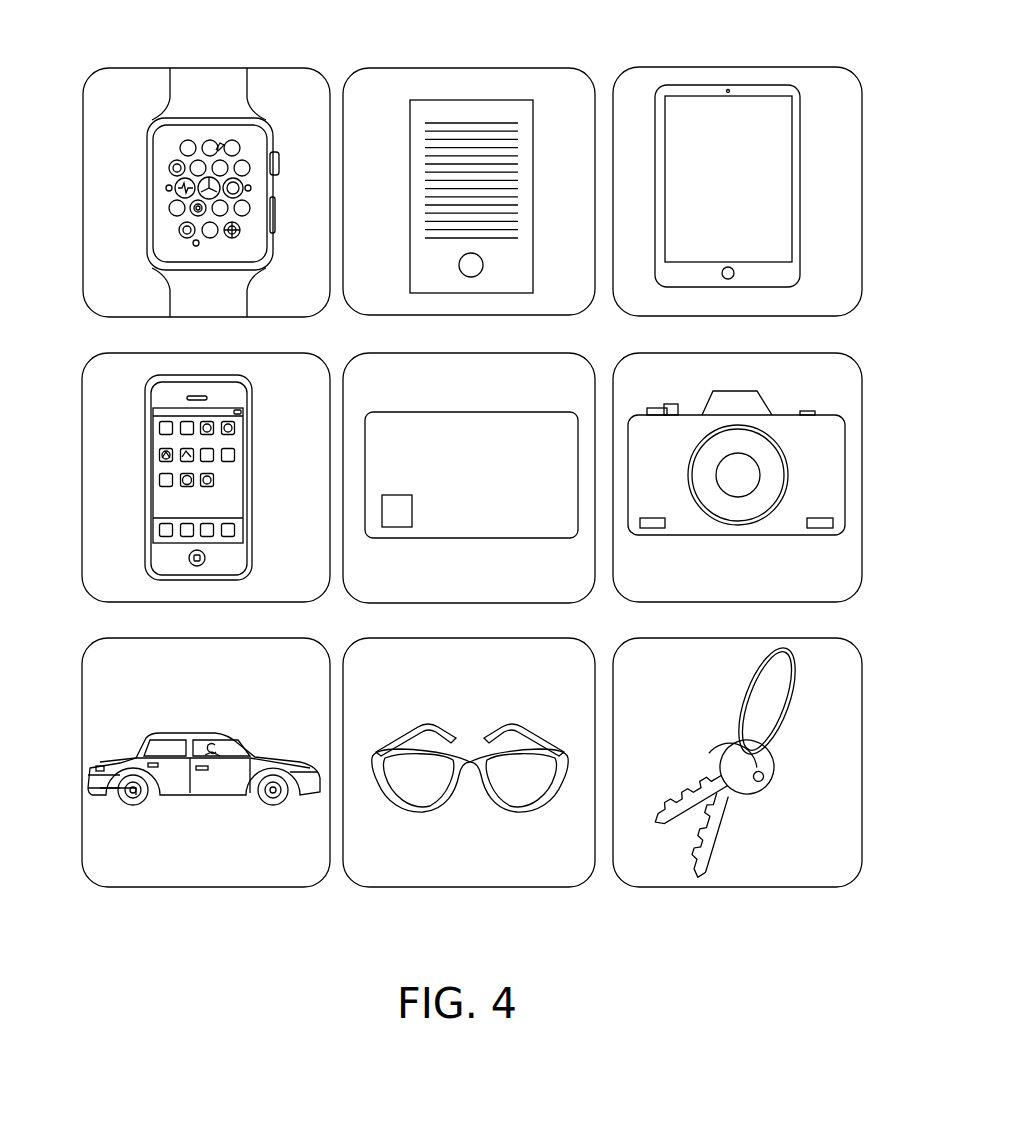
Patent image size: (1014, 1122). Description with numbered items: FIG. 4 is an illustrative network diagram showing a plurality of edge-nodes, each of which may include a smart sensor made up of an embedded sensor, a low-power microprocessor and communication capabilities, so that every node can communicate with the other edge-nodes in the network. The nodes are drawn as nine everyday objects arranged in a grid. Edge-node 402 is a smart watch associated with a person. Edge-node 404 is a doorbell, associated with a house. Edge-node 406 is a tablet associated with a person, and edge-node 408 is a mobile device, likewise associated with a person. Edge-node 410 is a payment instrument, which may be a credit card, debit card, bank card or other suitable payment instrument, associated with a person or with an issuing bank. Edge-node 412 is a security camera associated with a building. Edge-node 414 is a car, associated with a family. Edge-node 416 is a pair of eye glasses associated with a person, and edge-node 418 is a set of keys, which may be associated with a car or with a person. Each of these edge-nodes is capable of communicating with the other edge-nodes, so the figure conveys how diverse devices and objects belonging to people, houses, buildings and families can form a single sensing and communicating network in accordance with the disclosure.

The edge-node (smart watch) 402 is at (147, 315).
The edge-node (doorbell) 404 is at (470, 68).
The edge-node (tablet) 406 is at (803, 316).
The edge-node (mobile device) 408 is at (117, 602).
The edge-node (payment instrument) 410 is at (430, 353).
The edge-node (security camera) 412 is at (803, 602).
The edge-node (car) 414 is at (132, 887).
The edge-node (eye glasses) 416 is at (477, 887).
The edge-node (keys) 418 is at (807, 887).